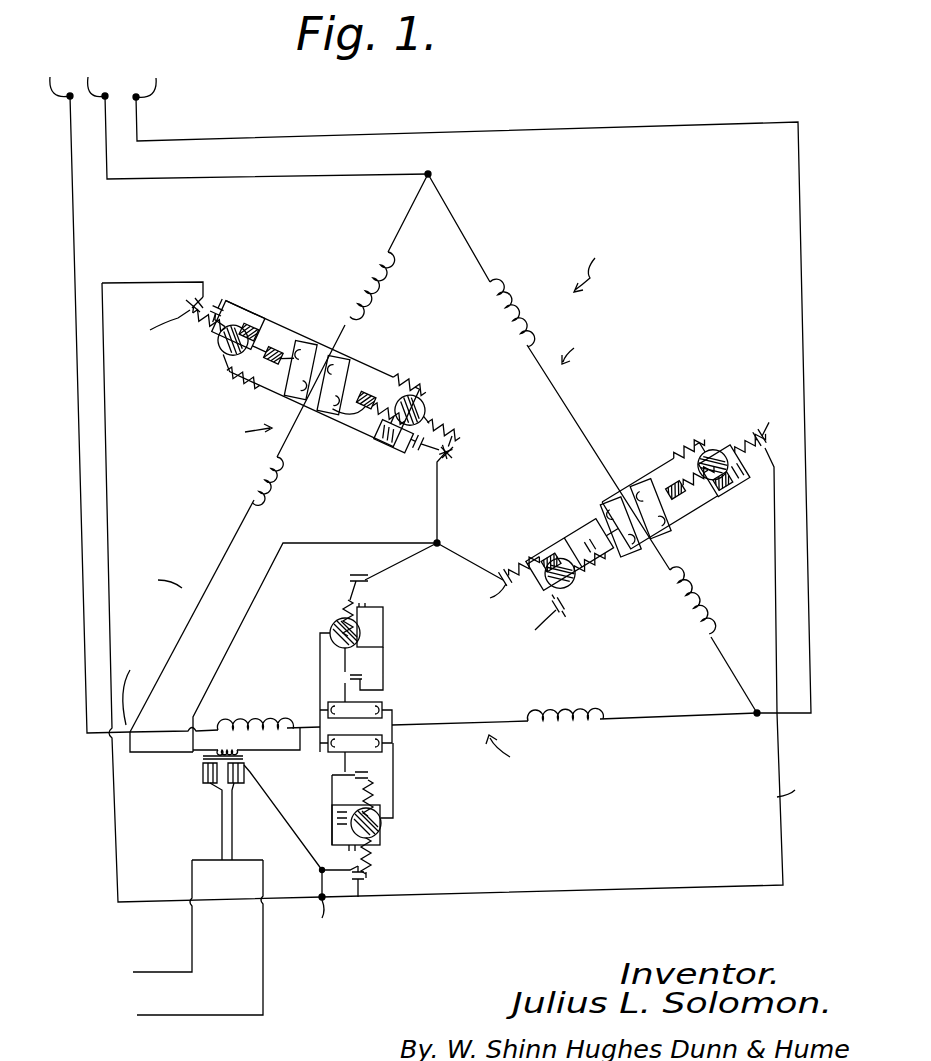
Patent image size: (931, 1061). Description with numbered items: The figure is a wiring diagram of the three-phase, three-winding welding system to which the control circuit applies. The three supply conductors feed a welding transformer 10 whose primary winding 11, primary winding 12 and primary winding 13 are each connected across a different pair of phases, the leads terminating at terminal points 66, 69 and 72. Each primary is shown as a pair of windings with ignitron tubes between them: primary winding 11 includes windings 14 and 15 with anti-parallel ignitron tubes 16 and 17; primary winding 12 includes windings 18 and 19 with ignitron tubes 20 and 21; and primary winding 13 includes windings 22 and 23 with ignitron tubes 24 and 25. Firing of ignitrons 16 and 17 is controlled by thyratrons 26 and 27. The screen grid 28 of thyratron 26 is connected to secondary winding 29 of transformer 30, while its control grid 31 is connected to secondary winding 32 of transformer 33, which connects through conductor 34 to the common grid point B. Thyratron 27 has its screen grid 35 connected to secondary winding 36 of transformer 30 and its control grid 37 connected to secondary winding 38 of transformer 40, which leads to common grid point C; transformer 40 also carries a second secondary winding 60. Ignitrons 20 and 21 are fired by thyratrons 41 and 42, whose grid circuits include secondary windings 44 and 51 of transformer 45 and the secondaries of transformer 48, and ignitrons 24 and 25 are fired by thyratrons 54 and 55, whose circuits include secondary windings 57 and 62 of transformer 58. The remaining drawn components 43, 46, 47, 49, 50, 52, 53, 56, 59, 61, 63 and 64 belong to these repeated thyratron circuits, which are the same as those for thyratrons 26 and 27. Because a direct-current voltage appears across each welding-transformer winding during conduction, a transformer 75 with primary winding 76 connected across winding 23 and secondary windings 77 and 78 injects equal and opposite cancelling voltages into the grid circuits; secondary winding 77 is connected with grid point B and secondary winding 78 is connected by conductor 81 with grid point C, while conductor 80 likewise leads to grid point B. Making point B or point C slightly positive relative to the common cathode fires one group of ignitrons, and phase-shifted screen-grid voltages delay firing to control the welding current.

The welding transformer 10 is at (593, 261).
The primary winding 11 is at (247, 437).
The primary winding 12 is at (577, 344).
The primary winding 13 is at (510, 753).
The winding 14 is at (250, 490).
The winding 15 is at (372, 278).
The ignitron tube 16 is at (301, 370).
The ignitron tube 17 is at (334, 385).
The winding 18 is at (510, 290).
The winding 19 is at (700, 612).
The ignitron tube 20 is at (651, 508).
The ignitron tube 21 is at (621, 527).
The winding 22 is at (570, 730).
The winding 23 is at (250, 708).
The ignitron tube 24 is at (372, 752).
The ignitron tube 25 is at (320, 701).
The thyratron 26 is at (233, 340).
The thyratron 27 is at (409, 385).
The screen grid 28 is at (209, 318).
The secondary winding 29 is at (238, 325).
The transformer 30 is at (272, 354).
The control grid 31 is at (236, 342).
The secondary winding 32 is at (205, 292).
The transformer 33 is at (442, 592).
The conductor 34 is at (157, 574).
The screen grid 35 is at (410, 410).
The secondary winding 36 is at (381, 409).
The control grid 37 is at (394, 436).
The secondary winding 38 is at (437, 470).
The transformer 40 is at (455, 450).
The thyratron 41 is at (712, 464).
The thyratron 42 is at (559, 573).
The anode 43 is at (724, 471).
The secondary winding 44 is at (691, 480).
The transformer 45 is at (602, 537).
The resistor 46 is at (689, 448).
The resistor 47 is at (750, 443).
The transformer 48 is at (764, 434).
The conductor 49 is at (802, 784).
The capacitor 50 is at (446, 516).
The secondary winding 51 is at (570, 555).
The resistor 52 is at (590, 562).
The capacitor 53 is at (521, 568).
The thyratron 54 is at (385, 826).
The thyratron 55 is at (330, 628).
The anode 56 is at (375, 840).
The secondary winding 57 is at (365, 785).
The transformer 58 is at (390, 684).
The grid 59 is at (380, 812).
The secondary winding 60 is at (340, 856).
The resistor 61 is at (332, 614).
The secondary winding 62 is at (365, 683).
The conductor 63 is at (320, 638).
The anode 64 is at (360, 590).
The terminal point 66 is at (138, 686).
The terminal point 69 is at (432, 172).
The terminal point 72 is at (755, 716).
The transformer 75 is at (194, 776).
The primary winding 76 is at (228, 745).
The secondary winding 77 is at (240, 790).
The secondary winding 78 is at (206, 786).
The conductor 80 is at (177, 1017).
The conductor 81 is at (146, 968).